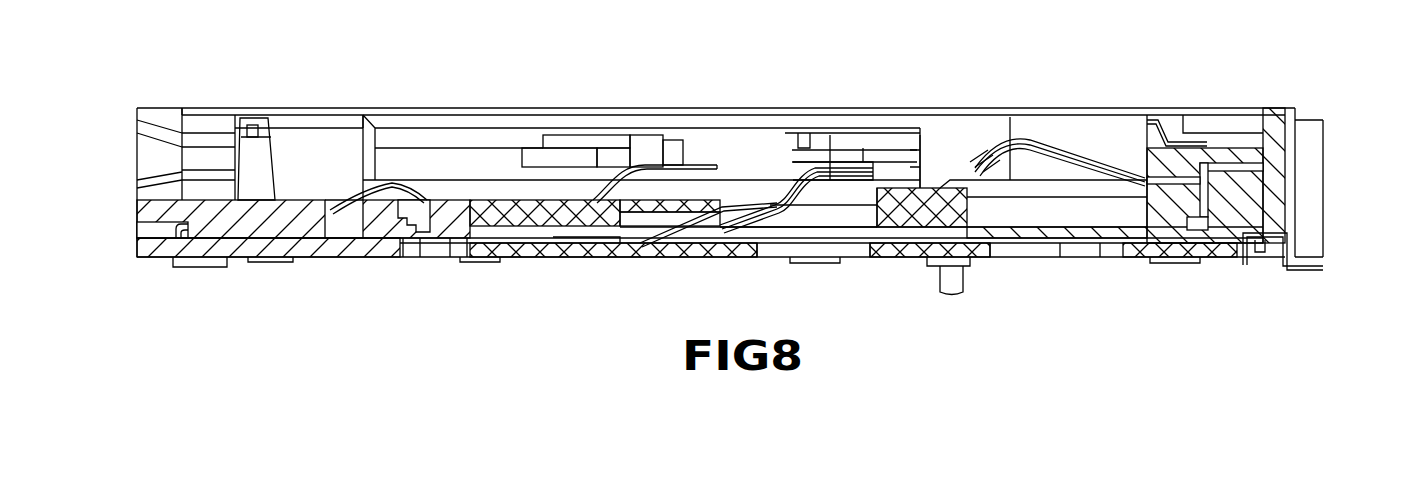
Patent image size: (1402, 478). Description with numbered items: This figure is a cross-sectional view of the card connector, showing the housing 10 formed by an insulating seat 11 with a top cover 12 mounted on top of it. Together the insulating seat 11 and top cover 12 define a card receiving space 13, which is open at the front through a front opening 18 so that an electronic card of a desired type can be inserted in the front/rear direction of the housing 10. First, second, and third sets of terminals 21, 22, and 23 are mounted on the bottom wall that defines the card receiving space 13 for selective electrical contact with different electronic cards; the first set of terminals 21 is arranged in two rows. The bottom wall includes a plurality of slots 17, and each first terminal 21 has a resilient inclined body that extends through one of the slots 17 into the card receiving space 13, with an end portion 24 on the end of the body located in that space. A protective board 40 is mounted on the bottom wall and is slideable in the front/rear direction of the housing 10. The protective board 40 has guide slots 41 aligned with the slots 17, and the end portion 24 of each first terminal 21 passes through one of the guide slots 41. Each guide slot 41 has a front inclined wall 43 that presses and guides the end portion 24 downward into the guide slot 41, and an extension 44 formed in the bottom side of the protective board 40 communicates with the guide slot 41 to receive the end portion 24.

The housing 10 is at (1117, 103).
The insulating seat 11 is at (1253, 177).
The top cover 12 is at (218, 110).
The card receiving space 13 is at (407, 157).
The slots 17 is at (840, 233).
The front opening 18 is at (152, 167).
The first set of terminals 21 is at (727, 203).
The second set of terminals 22 is at (1007, 132).
The third set of terminals 23 is at (393, 183).
The end portion 24 is at (807, 167).
The protective board 40 is at (540, 217).
The guide slots 41 is at (858, 213).
The front inclined wall 43 is at (718, 168).
The extension 44 is at (650, 217).